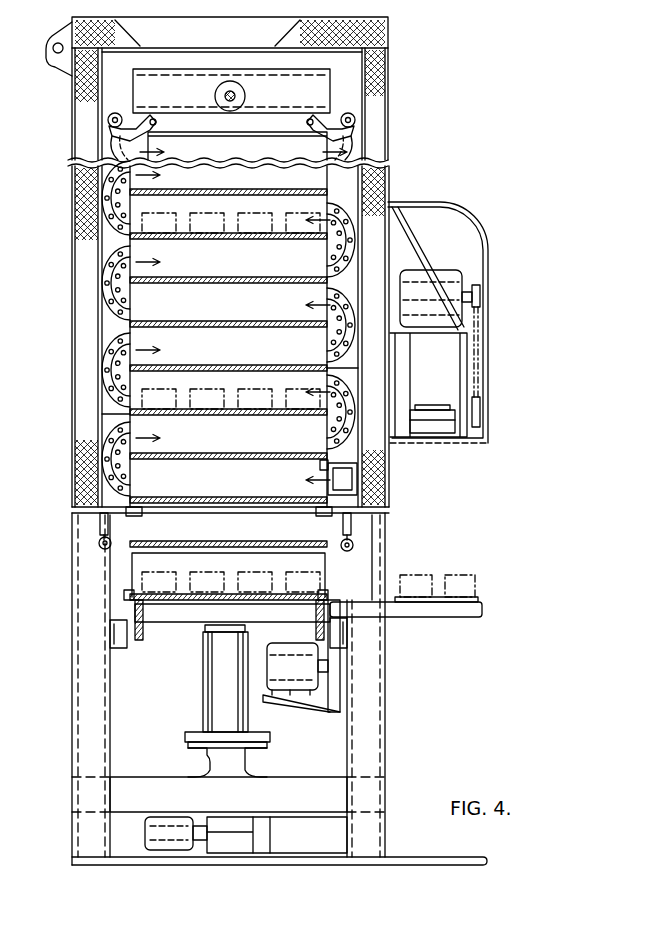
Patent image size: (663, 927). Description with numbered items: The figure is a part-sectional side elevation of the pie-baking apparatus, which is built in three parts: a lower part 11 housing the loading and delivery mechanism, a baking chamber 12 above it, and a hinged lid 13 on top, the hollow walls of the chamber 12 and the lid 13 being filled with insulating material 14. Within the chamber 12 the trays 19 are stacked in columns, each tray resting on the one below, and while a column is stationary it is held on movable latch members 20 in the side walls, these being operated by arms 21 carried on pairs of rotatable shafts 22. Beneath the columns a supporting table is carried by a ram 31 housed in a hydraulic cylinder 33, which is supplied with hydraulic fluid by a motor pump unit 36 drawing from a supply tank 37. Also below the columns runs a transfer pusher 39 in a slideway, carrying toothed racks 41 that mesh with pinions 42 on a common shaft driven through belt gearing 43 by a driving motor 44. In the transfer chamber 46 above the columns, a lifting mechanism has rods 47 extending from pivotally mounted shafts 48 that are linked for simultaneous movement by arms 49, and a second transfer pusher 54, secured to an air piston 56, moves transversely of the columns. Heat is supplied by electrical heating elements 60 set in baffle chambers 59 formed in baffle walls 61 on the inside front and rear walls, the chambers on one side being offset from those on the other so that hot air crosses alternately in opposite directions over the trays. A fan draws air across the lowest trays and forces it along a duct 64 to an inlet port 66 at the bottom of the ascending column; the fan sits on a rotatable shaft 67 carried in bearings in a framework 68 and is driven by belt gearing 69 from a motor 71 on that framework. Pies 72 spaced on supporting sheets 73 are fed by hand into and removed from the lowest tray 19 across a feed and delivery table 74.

The lower part 11 is at (80, 662).
The baking chamber 12 is at (86, 338).
The hinged lid 13 is at (340, 32).
The insulating material 14 is at (88, 104).
The trays 19 is at (322, 90).
The latch members 20 is at (136, 512).
The arms 21 is at (100, 545).
The rotatable shafts 22 is at (101, 546).
The ram 31 is at (210, 630).
The hydraulic cylinder 33 is at (175, 615).
The motor pump unit 36 is at (150, 832).
The supply tank 37 is at (245, 832).
The transfer pusher 39 is at (126, 596).
The toothed racks 41 is at (136, 608).
The pinions 42 is at (140, 632).
The belt gearing 43 is at (325, 648).
The driving motor 44 is at (295, 668).
The transfer chamber 46 is at (342, 65).
The rods 47 is at (153, 118).
The shafts 48 is at (107, 125).
The arms 49 is at (129, 110).
The transfer pusher 54 is at (237, 95).
The air piston 56 is at (222, 95).
The baffle chambers 59 is at (212, 303).
The electrical heating elements 60 is at (118, 262).
The baffle walls 61 is at (115, 413).
The duct 64 is at (350, 480).
The inlet port 66 is at (326, 467).
The rotatable shaft 67 is at (433, 412).
The framework 68 is at (462, 425).
The belt gearing 69 is at (478, 355).
The motor 71 is at (445, 283).
The pies 72 is at (203, 212).
The supporting sheets 73 is at (477, 598).
The feed and delivery table 74 is at (462, 614).